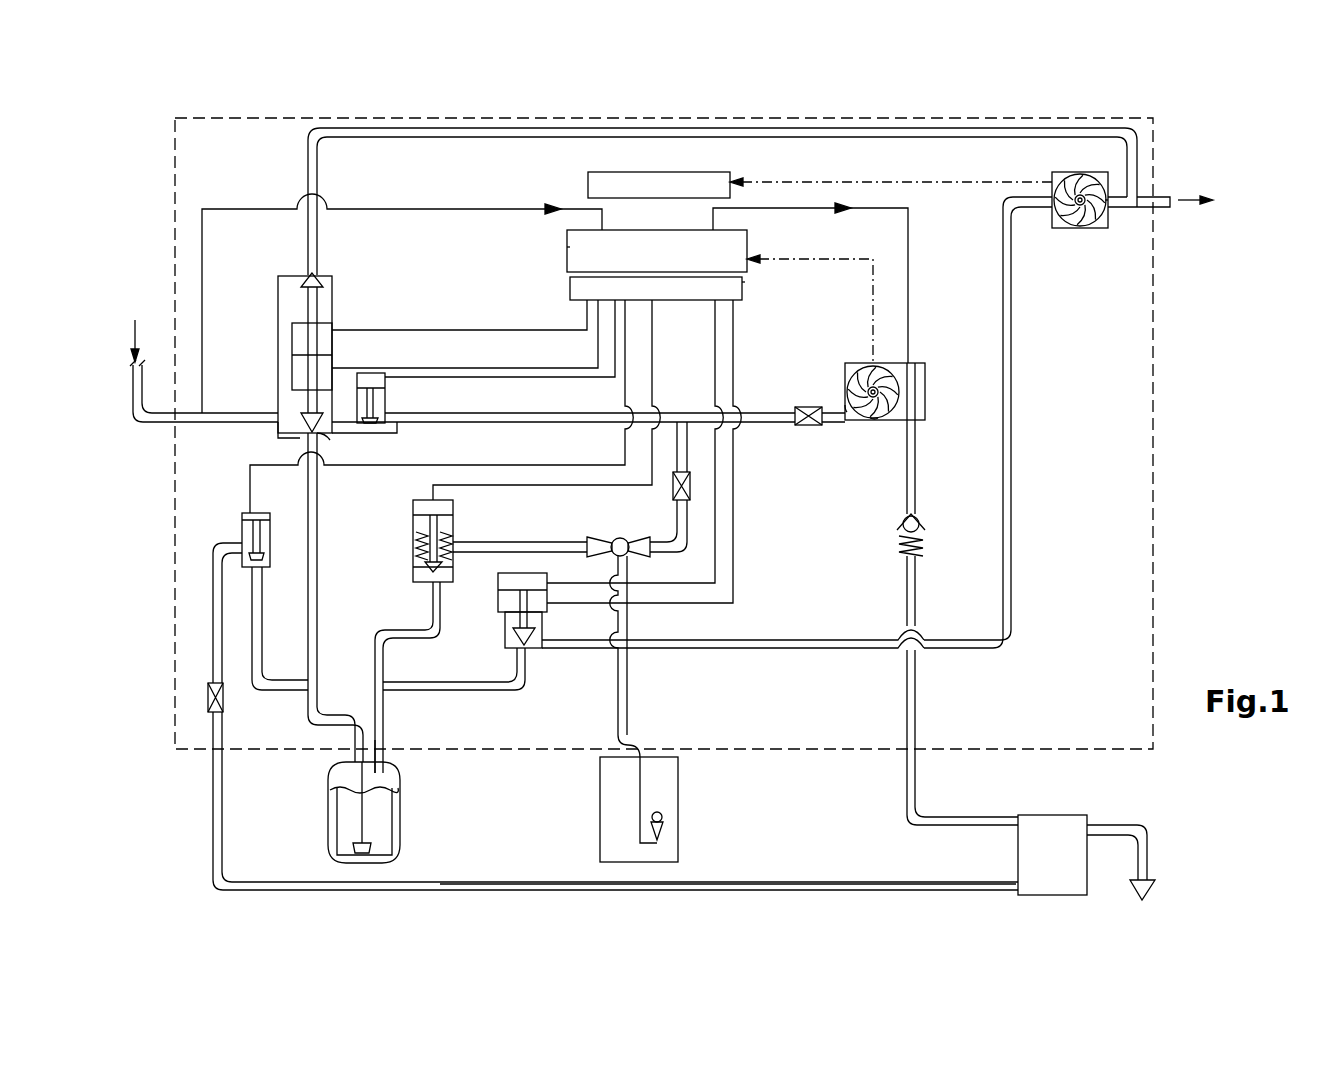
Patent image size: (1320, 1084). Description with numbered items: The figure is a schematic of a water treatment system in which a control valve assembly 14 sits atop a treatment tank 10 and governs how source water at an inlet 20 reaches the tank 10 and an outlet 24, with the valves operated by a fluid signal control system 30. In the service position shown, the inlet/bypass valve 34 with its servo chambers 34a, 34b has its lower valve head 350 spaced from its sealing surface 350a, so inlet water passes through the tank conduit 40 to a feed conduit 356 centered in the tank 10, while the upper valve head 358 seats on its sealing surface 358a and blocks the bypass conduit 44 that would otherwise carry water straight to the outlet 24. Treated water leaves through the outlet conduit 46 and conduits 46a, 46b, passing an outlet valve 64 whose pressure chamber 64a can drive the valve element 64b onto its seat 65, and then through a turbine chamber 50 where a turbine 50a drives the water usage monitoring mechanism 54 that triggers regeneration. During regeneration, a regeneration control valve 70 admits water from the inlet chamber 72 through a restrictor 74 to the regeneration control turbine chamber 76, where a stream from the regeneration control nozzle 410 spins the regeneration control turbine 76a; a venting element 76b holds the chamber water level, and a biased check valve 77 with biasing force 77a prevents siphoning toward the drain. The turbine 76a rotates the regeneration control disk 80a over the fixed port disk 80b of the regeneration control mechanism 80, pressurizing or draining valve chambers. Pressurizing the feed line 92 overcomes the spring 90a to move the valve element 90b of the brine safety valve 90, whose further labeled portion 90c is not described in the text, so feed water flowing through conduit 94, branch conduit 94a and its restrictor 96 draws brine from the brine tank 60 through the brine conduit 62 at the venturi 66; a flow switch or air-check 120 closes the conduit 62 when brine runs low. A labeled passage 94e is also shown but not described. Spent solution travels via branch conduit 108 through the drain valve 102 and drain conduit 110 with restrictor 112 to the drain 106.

The treatment tank 10 is at (312, 799).
The control valve assembly 14 is at (1157, 495).
The inlet 20 is at (144, 440).
The outlet 24 is at (1200, 180).
The fluid signal control system 30 is at (765, 285).
The inlet/bypass valve 34 is at (426, 200).
The servo chamber 34a is at (323, 333).
The servo chamber 34b is at (323, 377).
The tank conduit 40 is at (317, 613).
The bypass conduit 44 is at (482, 138).
The outlet conduit 46 is at (385, 733).
The outlet conduit 46a is at (490, 690).
The branch outlet conduit 46b is at (745, 650).
The turbine chamber 50 is at (1076, 245).
The turbine 50a is at (1107, 198).
The water usage monitoring mechanism 54 is at (742, 168).
The brine tank 60 is at (678, 797).
The brine conduit 62 is at (627, 692).
The outlet valve 64 is at (485, 612).
The pressure chamber 64a is at (535, 582).
The valve element 64b is at (532, 622).
The seat 65 is at (533, 644).
The venturi 66 is at (633, 522).
The regeneration control valve 70 is at (400, 395).
The inlet chamber 72 is at (293, 423).
The restrictor 74 is at (807, 425).
The regeneration control turbine chamber 76 is at (922, 393).
The regeneration control turbine 76a is at (876, 422).
The venting element 76b is at (914, 377).
The check valve 77 is at (935, 506).
The biasing force 77a is at (920, 543).
The regeneration control mechanism 80 is at (760, 242).
The regeneration control disk 80a is at (567, 247).
The port disk 80b is at (585, 285).
The brine safety valve 90 is at (457, 523).
The spring 90a is at (420, 547).
The valve element 90b is at (418, 577).
The regulator piston 90c is at (425, 507).
The feed line 92 is at (532, 488).
The conduit 94 is at (563, 422).
The branch conduit 94a is at (687, 452).
The regeneration line segment 94e is at (375, 677).
The restrictor 96 is at (690, 488).
The drain valve 102 is at (235, 518).
The drain 106 is at (1052, 835).
The branch conduit 108 is at (280, 690).
The drain conduit 110 is at (447, 882).
The restrictor 112 is at (208, 696).
The flow switch or air-check 120 is at (662, 820).
The valve seat or head 350 is at (305, 418).
The sealing surface 350a is at (322, 434).
The feed conduit 356 is at (363, 822).
The upper valve head 358 is at (300, 283).
The sealing surface 358a is at (316, 262).
The regeneration control nozzle 410 is at (847, 407).